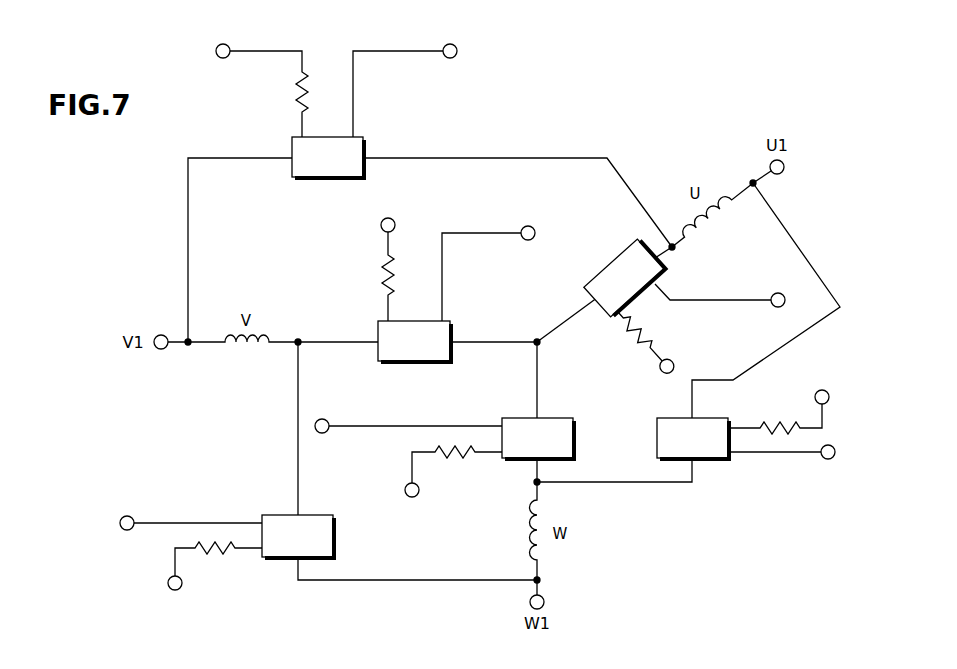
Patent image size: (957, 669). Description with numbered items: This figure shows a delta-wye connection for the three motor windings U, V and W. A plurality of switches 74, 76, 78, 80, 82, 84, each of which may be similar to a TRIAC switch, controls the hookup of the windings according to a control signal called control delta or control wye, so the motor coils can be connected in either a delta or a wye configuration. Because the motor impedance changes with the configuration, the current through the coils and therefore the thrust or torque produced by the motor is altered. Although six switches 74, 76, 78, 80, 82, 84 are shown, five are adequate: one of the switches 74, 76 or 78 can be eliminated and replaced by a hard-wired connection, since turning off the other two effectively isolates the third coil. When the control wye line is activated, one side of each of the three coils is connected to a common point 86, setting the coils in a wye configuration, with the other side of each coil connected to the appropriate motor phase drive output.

The switch 74 is at (627, 252).
The switch 76 is at (550, 418).
The switch 78 is at (378, 322).
The switch 80 is at (724, 418).
The switch 82 is at (316, 515).
The switch 84 is at (320, 178).
The common point 86 is at (537, 340).